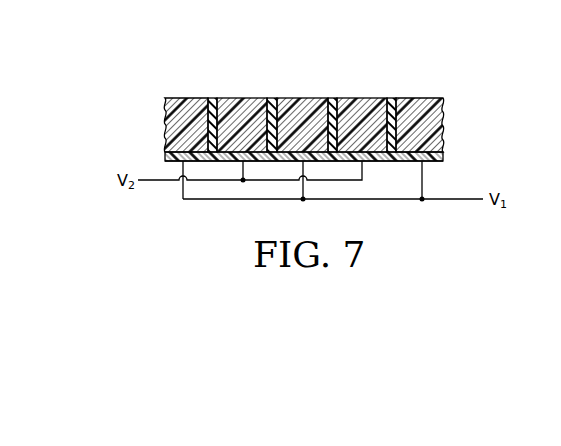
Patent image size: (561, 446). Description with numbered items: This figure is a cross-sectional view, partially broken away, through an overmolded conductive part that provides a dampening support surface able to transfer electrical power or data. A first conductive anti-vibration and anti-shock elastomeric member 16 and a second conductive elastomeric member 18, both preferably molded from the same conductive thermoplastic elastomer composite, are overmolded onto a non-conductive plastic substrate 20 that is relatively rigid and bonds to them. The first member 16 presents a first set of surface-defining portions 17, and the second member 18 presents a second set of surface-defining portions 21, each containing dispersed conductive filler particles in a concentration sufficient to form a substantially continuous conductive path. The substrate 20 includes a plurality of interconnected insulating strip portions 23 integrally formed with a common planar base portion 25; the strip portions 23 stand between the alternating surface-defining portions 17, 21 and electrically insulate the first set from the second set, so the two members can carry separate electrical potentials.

The first conductive anti-vibration and anti-shock elastomeric member 16 is at (304, 86).
The first set of surface-defining portions 17 is at (228, 97).
The second conductive anti-vibration and anti-shock elastomeric member 18 is at (313, 89).
The non-conductive plastic substrate 20 is at (437, 169).
The second set of surface-defining portions 21 is at (182, 98).
The strip portions 23 is at (211, 97).
The common planar base portion 25 is at (226, 162).